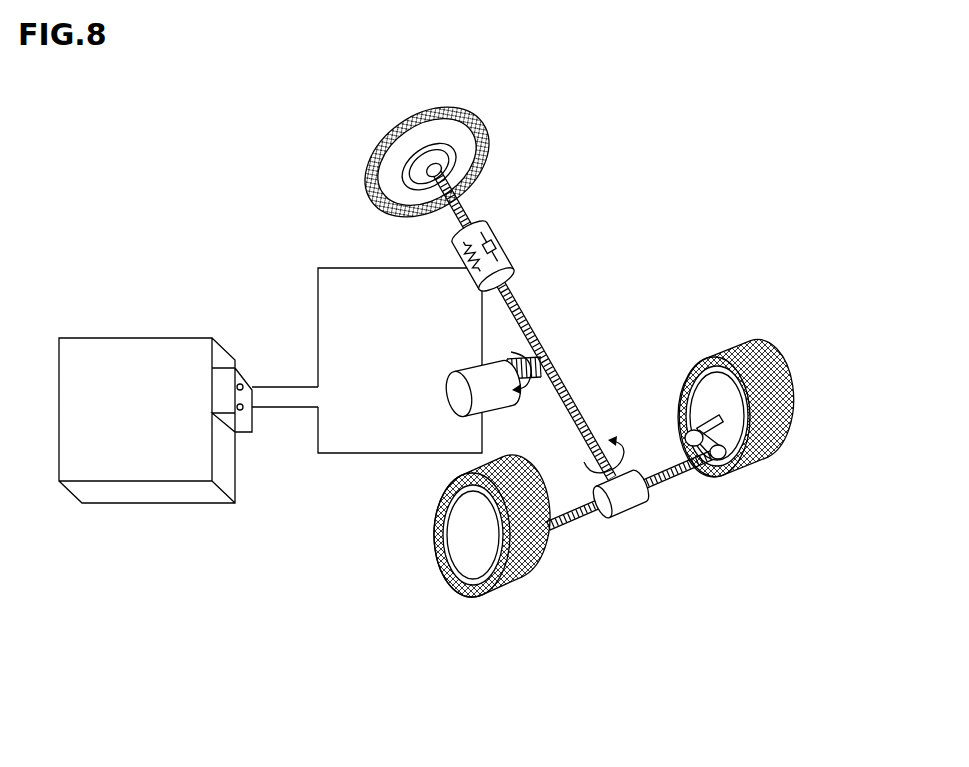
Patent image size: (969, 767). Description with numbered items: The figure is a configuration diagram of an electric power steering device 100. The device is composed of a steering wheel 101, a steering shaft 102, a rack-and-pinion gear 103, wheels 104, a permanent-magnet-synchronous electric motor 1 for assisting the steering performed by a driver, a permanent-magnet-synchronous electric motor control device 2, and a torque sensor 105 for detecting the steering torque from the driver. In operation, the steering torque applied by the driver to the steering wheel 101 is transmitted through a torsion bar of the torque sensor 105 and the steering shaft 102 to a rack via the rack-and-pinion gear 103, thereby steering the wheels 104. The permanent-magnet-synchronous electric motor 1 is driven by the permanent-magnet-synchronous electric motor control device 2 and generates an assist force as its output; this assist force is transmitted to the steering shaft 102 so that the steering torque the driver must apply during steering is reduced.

The electric power steering device 100 is at (175, 124).
The steering wheel 101 is at (493, 143).
The steering shaft 102 is at (563, 371).
The rack-and-pinion gear 103 is at (622, 505).
The wheels 104 is at (552, 558).
The torque sensor 105 is at (499, 245).
The permanent-magnet-synchronous electric motor 1 is at (473, 370).
The permanent-magnet-synchronous electric motor control device 2 is at (118, 338).